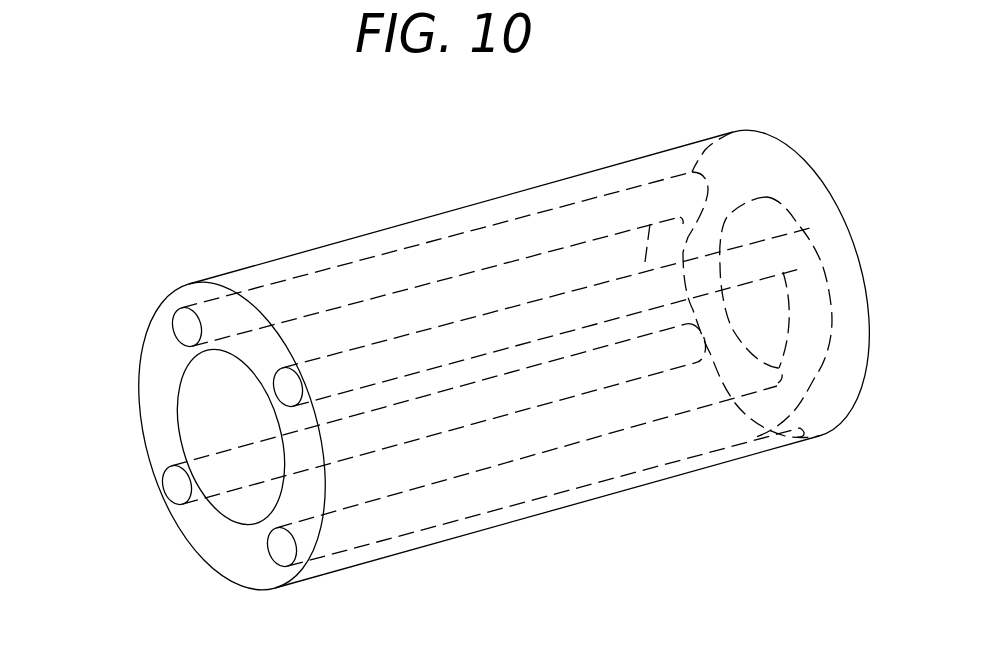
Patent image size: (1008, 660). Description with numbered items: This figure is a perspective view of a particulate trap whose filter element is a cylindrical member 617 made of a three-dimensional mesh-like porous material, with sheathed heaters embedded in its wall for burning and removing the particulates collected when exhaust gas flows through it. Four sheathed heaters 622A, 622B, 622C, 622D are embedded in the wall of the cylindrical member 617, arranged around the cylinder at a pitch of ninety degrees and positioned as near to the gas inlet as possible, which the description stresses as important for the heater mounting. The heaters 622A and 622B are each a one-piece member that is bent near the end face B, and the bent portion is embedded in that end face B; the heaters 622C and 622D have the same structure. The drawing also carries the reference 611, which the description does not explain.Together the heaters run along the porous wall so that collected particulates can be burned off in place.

The cylindrical body 611 is at (158, 418).
The cylindrical member 617 is at (213, 545).
The sheathed heater 622A is at (183, 326).
The sheathed heater 622B is at (288, 384).
The sheathed heater 622C is at (283, 546).
The sheathed heater 622D is at (175, 488).
The end face B is at (857, 286).